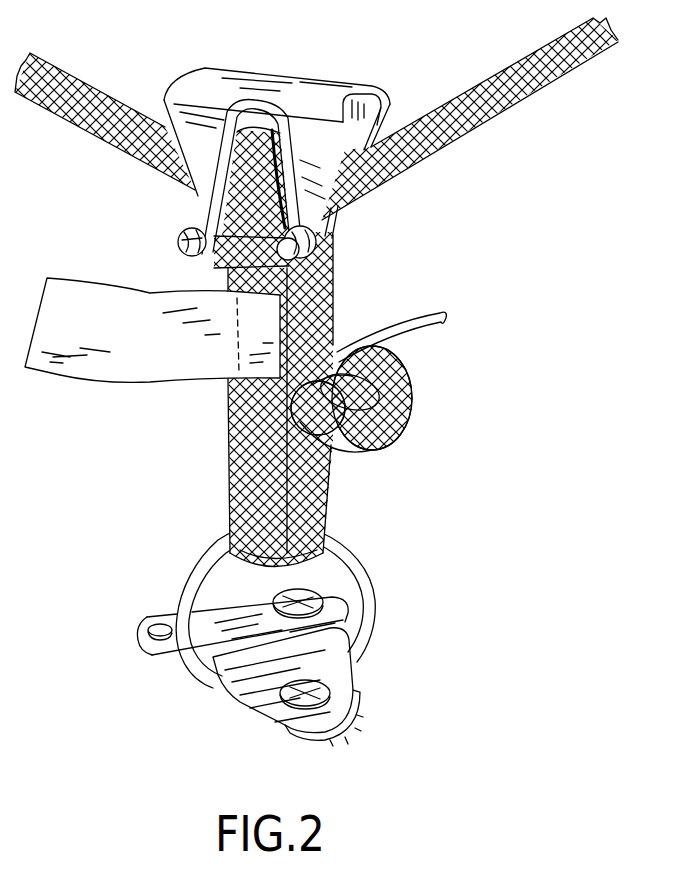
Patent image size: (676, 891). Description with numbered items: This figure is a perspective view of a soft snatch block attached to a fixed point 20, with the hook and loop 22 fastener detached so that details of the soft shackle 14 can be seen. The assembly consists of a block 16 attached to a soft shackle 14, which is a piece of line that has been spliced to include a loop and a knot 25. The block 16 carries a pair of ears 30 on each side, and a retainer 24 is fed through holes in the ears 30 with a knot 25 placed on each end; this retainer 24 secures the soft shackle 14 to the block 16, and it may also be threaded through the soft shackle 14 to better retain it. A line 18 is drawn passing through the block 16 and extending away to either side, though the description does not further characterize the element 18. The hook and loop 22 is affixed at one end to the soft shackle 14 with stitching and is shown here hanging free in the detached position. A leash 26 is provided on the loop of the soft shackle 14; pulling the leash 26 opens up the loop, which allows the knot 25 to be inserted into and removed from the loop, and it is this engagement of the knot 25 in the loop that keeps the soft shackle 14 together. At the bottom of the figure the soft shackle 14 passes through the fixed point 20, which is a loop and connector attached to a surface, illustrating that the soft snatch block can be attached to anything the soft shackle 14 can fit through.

The soft shackle 14 is at (333, 492).
The block 16 is at (336, 77).
The rope line 18 is at (534, 98).
The fixed point 20 is at (173, 713).
The hook and loop 22 is at (62, 277).
The retainer 24 is at (228, 268).
The knot 25 is at (178, 243).
The leash 26 is at (410, 313).
The ears 30 is at (203, 222).